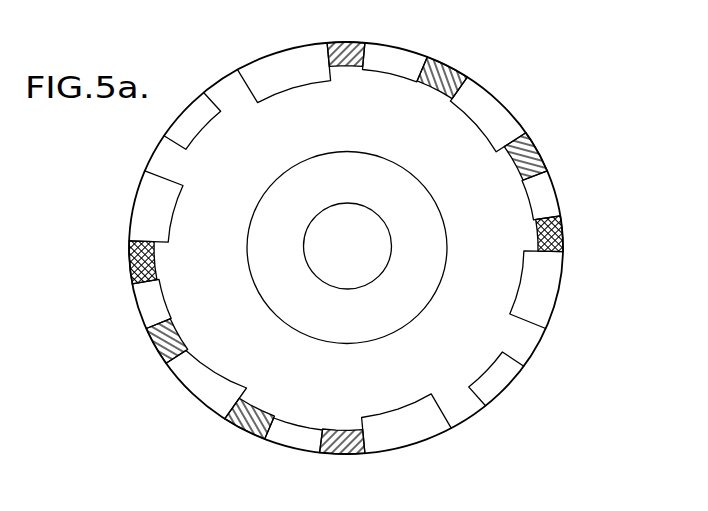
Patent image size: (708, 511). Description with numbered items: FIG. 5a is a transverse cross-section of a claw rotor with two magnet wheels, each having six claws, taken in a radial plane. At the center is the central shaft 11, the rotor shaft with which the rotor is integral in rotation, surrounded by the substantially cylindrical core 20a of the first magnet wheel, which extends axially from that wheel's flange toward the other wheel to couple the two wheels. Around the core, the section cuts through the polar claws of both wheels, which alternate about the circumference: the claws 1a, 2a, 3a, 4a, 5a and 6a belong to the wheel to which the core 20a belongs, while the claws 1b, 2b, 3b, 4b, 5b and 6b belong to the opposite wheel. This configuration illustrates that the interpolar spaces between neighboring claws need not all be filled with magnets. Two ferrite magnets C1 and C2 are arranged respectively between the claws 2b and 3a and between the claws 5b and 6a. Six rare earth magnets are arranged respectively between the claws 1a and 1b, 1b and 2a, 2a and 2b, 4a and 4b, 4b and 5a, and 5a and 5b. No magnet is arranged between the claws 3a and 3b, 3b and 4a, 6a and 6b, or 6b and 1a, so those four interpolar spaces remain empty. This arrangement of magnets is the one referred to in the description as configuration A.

The claw 1a is at (280, 70).
The claw 1b is at (392, 57).
The claw 2a is at (480, 108).
The claw 2b is at (545, 193).
The claw 3a is at (542, 288).
The claw 3b is at (497, 378).
The claw 4a is at (397, 425).
The claw 4b is at (295, 440).
The claw 5a is at (202, 380).
The claw 5b is at (152, 303).
The claw 6a is at (145, 213).
The claw 6b is at (197, 120).
The ferrite magnet C1 is at (562, 232).
The ferrite magnet C2 is at (128, 265).
The core 20a is at (345, 167).
The central shaft 11 is at (353, 257).